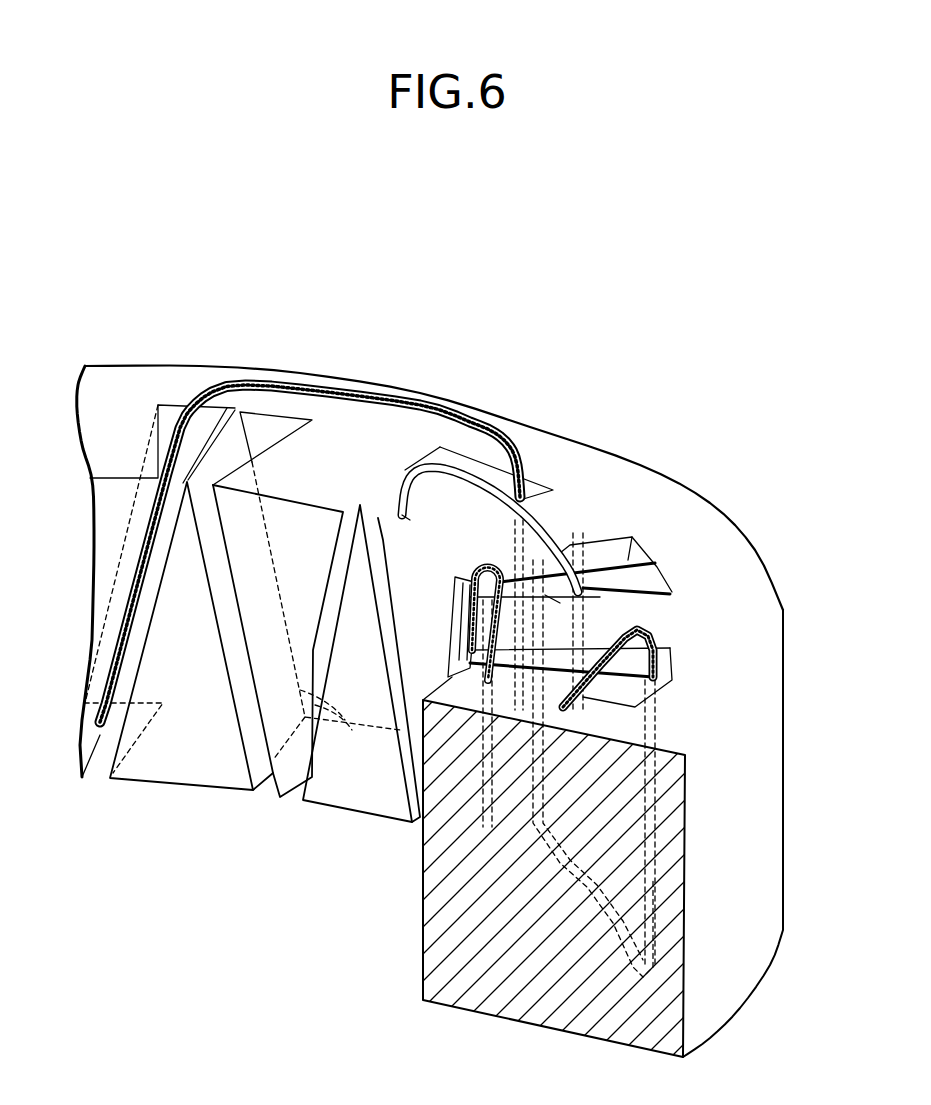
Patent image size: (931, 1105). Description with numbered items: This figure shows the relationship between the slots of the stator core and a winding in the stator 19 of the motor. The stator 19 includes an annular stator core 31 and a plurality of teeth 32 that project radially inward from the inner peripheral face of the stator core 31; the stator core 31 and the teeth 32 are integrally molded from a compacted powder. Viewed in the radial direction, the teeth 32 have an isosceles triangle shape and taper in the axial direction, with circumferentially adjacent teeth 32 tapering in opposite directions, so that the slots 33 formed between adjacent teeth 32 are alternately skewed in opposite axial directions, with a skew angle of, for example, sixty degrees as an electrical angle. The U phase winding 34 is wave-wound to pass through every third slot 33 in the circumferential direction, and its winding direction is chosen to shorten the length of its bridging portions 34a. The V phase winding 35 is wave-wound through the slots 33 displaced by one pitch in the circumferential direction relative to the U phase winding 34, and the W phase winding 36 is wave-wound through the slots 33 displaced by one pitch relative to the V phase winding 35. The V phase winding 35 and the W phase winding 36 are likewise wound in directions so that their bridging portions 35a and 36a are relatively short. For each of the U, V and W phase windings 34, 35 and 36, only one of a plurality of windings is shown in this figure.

The stator 19 is at (430, 678).
The stator core 31 is at (705, 520).
The teeth 32 is at (368, 691).
The slots 33 is at (178, 405).
The U phase winding 34 is at (356, 386).
The bridging portions 34a is at (423, 407).
The V phase winding 35 is at (534, 503).
The bridging portions 35a is at (445, 462).
The W phase winding 36 is at (417, 573).
The bridging portions 36a is at (545, 595).